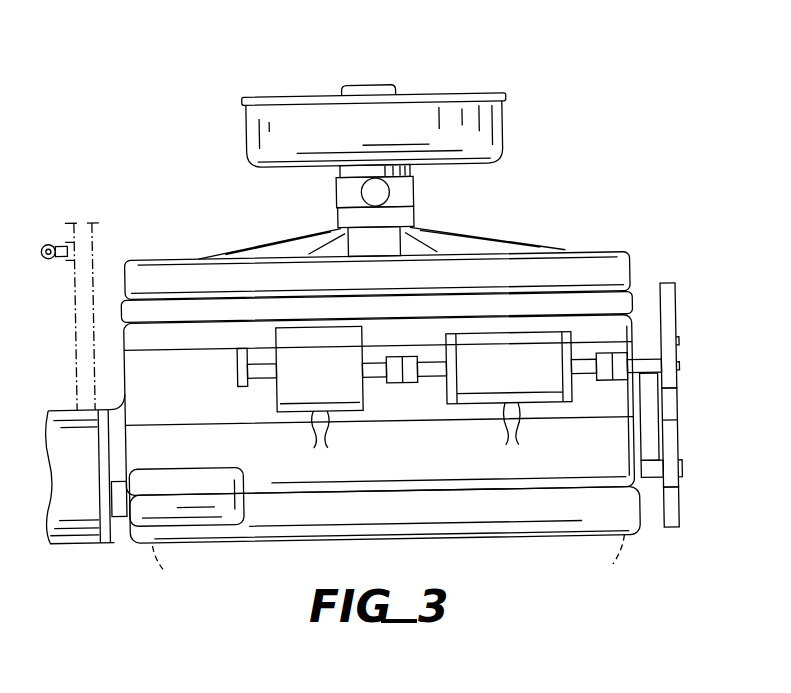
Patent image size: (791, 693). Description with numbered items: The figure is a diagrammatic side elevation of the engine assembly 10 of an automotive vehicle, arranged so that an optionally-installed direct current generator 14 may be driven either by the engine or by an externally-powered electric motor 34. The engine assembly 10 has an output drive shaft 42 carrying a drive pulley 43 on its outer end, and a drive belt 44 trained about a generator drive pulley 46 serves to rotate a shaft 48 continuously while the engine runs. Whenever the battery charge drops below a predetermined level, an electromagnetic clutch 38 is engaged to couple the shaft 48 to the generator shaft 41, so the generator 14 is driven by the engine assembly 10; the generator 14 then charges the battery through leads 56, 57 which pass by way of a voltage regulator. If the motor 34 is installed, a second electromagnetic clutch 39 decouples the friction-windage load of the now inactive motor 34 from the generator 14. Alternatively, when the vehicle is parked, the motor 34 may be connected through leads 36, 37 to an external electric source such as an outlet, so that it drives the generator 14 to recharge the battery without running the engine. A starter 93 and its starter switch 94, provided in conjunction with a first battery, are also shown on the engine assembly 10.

The engine assembly 10 is at (200, 204).
The direct current generator 14 is at (508, 345).
The motor 34 is at (320, 344).
The lead 36 is at (313, 447).
The lead 37 is at (327, 447).
The electromagnetic clutch 38 is at (605, 384).
The electromagnetic clutch 39 is at (403, 383).
The generator shaft 41 is at (377, 365).
The output drive shaft 42 is at (681, 478).
The drive pulley 43 is at (670, 505).
The drive belt 44 is at (668, 411).
The generator drive pulley 46 is at (668, 358).
The shaft 48 is at (645, 366).
The lead 56 is at (505, 447).
The lead 57 is at (518, 447).
The starter 93 is at (178, 479).
The starter switch 94 is at (70, 252).